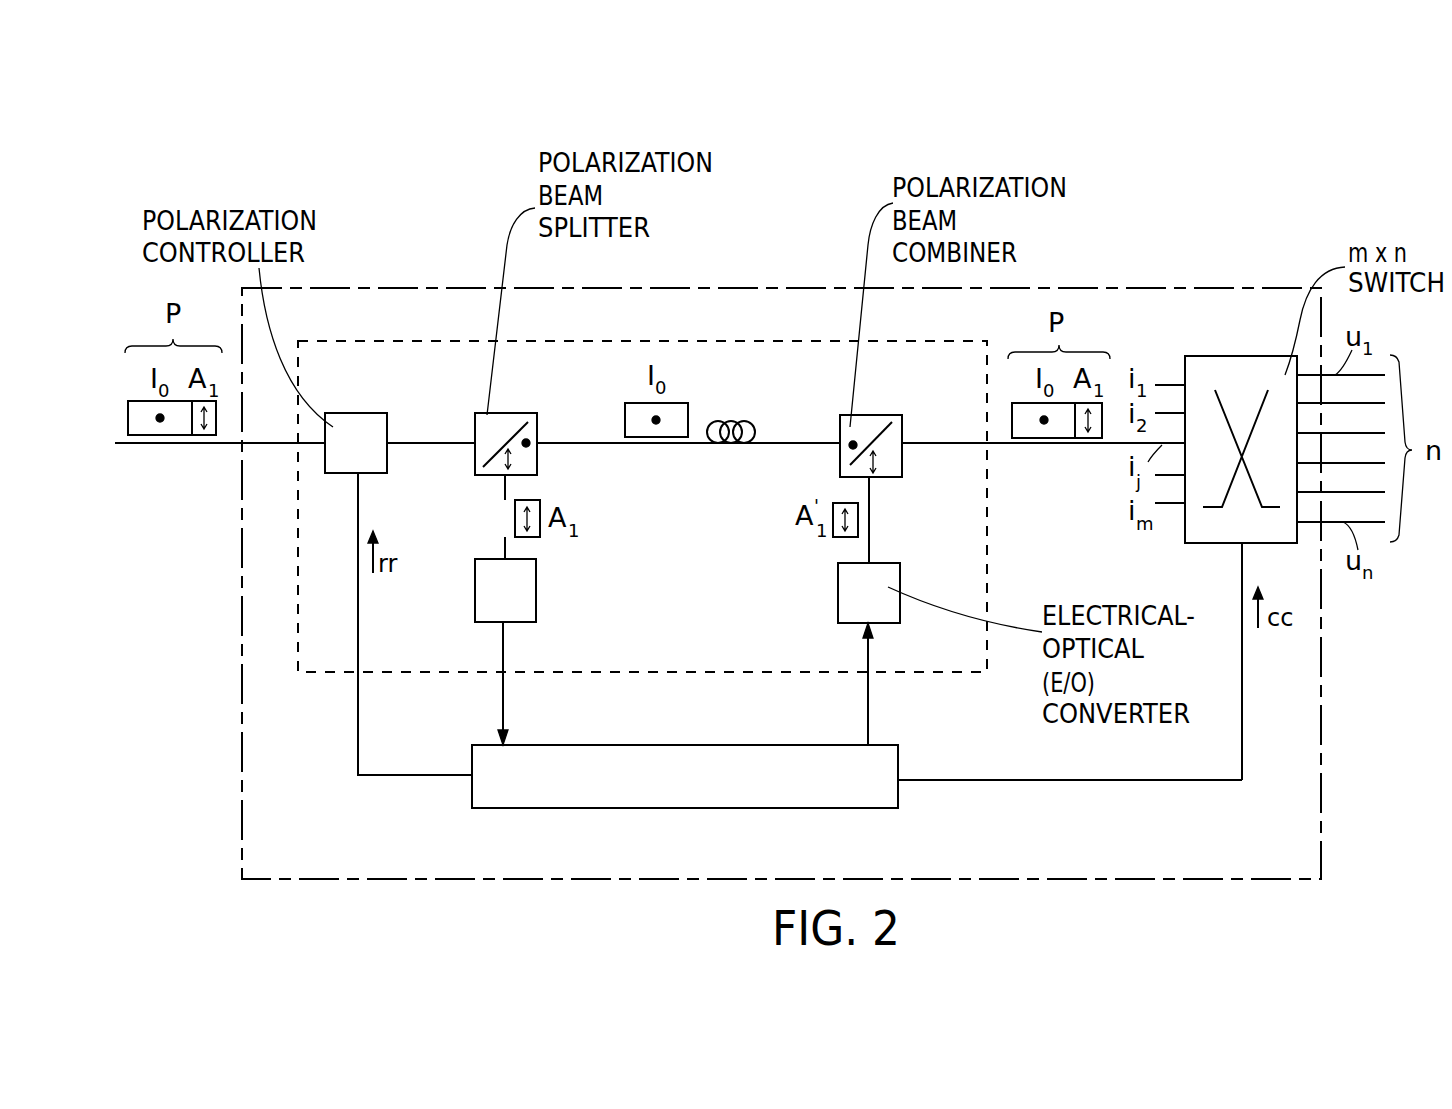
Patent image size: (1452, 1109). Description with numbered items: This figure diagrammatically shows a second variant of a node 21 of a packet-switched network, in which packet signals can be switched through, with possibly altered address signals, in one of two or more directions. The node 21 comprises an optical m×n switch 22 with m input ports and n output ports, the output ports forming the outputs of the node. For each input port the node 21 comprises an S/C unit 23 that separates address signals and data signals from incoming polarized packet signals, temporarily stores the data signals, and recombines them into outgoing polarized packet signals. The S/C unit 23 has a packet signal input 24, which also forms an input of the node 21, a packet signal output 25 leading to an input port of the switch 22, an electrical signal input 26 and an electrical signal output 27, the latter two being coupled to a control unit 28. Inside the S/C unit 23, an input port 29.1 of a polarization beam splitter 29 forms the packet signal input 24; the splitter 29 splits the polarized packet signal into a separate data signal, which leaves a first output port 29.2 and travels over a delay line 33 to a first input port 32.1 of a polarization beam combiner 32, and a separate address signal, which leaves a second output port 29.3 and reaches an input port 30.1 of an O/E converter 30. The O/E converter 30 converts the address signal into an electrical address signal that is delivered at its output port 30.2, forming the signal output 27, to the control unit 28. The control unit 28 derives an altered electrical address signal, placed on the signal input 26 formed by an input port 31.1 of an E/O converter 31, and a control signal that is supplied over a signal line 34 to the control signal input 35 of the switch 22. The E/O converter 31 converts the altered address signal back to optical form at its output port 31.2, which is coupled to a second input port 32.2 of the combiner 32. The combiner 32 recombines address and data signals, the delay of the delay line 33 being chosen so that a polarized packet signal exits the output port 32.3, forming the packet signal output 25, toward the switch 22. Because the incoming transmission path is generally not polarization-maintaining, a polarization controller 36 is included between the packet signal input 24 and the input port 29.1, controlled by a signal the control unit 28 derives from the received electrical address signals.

The node 21 is at (647, 880).
The optical m×n switch 22 is at (1213, 356).
The S/C unit 23 is at (610, 341).
The packet signal input 24 is at (278, 443).
The packet signal output 25 is at (1050, 443).
The electrical signal input 26 is at (868, 735).
The electrical signal output 27 is at (503, 687).
The control unit 28 is at (662, 808).
The polarization beam splitter 29 is at (502, 413).
The input port of polarization beam splitter 29.1 is at (473, 443).
The first output port of polarization beam splitter 29.2 is at (540, 443).
The second output port of polarization beam splitter 29.3 is at (500, 488).
The opto-electrical converter 30 is at (475, 608).
The input port of O/E converter 30.1 is at (502, 557).
The output port of O/E converter 30.2 is at (502, 632).
The electro-optical signal converter 31 is at (838, 613).
The input port of E/O converter 31.1 is at (868, 627).
The output port of E/O converter 31.2 is at (869, 562).
The polarization beam combiner 32 is at (883, 415).
The first input port of polarization beam combiner 32.1 is at (838, 443).
The second input port of polarization beam combiner 32.2 is at (869, 480).
The output port of polarization beam combiner 32.3 is at (903, 443).
The delay line 33 is at (730, 422).
The signal line 34 is at (1048, 780).
The control signal input 35 is at (1240, 555).
The polarization controller 36 is at (377, 413).